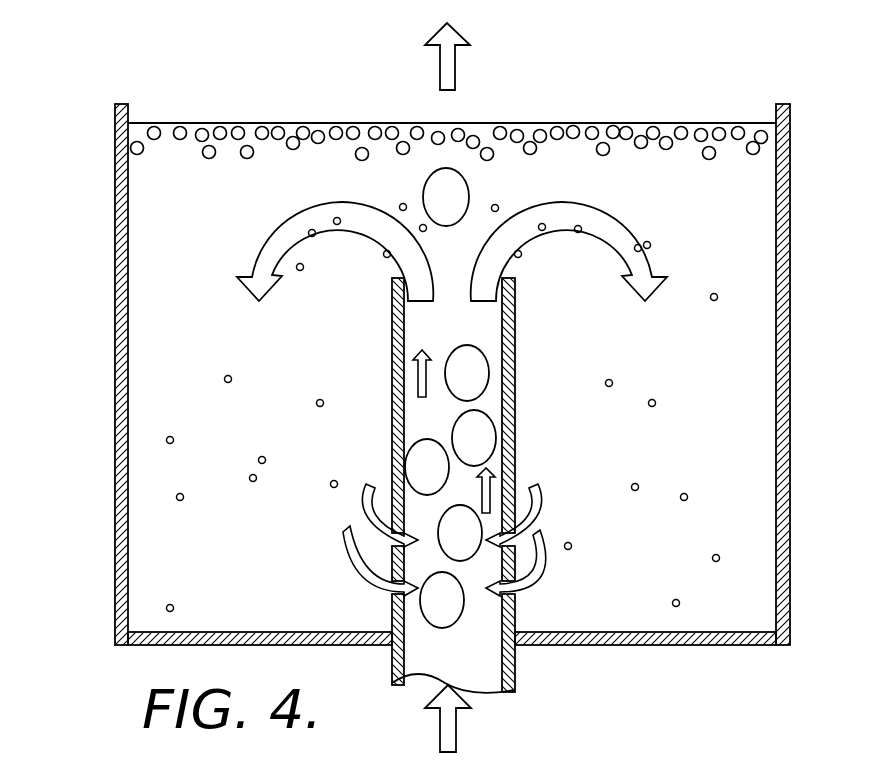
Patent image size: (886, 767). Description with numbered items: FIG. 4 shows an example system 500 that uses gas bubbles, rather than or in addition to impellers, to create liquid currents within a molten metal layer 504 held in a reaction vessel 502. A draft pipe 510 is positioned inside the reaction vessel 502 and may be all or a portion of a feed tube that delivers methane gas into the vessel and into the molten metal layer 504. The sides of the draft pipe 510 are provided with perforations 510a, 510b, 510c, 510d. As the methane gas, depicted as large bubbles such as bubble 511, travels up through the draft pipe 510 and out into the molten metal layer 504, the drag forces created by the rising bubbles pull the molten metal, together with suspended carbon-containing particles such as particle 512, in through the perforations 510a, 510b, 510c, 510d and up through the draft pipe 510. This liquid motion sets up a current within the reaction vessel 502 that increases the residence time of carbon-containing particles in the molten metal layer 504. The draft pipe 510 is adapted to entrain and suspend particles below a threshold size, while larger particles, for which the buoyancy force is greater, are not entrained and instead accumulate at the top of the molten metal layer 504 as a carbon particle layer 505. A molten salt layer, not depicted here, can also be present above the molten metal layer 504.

The system 500 is at (97, 99).
The reaction vessel 502 is at (790, 343).
The molten metal layer 504 is at (172, 158).
The carbon particle layer 505 is at (532, 130).
The draft pipe 510 is at (392, 662).
The perforation 510a is at (538, 588).
The perforation 510b is at (537, 497).
The perforation 510c is at (374, 522).
The perforation 510d is at (378, 584).
The bubble 511 is at (440, 628).
The particle 512 is at (333, 481).